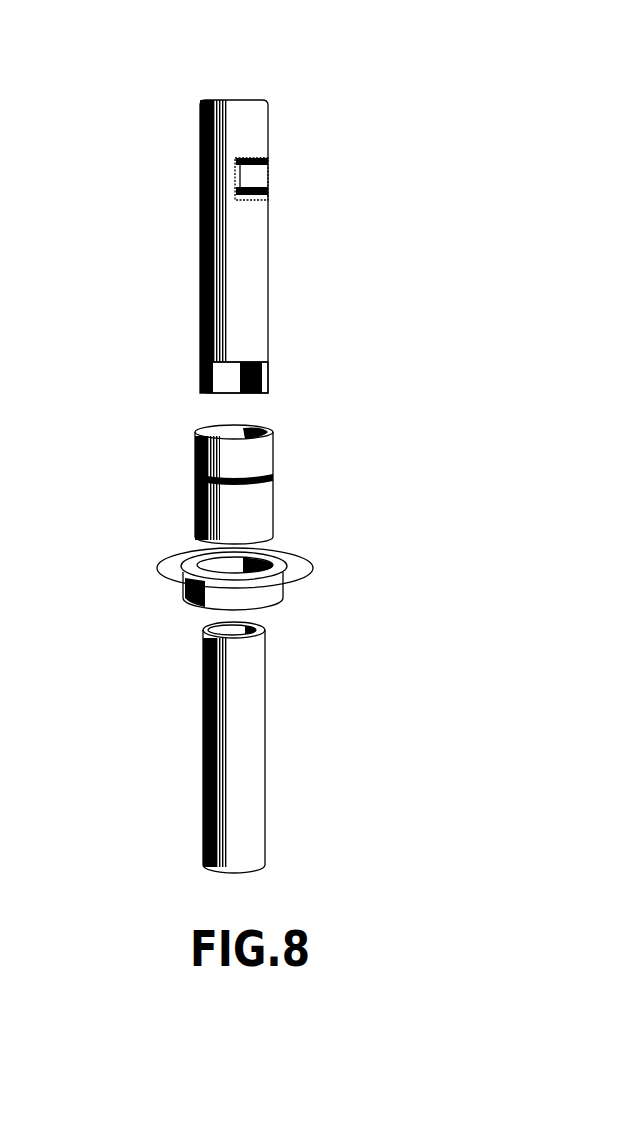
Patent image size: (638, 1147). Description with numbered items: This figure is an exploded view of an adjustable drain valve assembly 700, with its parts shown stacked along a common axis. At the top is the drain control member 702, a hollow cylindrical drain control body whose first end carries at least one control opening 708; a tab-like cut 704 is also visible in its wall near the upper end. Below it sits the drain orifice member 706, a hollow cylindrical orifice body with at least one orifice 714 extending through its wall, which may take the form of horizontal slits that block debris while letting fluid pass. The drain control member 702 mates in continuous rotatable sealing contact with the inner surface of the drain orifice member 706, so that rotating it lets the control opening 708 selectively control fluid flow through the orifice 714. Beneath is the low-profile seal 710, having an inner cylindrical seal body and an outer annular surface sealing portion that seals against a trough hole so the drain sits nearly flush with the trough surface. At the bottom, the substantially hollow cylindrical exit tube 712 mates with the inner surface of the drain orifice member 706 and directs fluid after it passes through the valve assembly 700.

The adjustable drain valve assembly 700 is at (243, 54).
The drain control member 702 is at (232, 218).
The slot tab 704 is at (250, 197).
The drain orifice member 706 is at (202, 445).
The control opening 708 is at (240, 380).
The low-profile seal 710 is at (172, 573).
The exit tube 712 is at (218, 720).
The orifice 714 is at (257, 473).